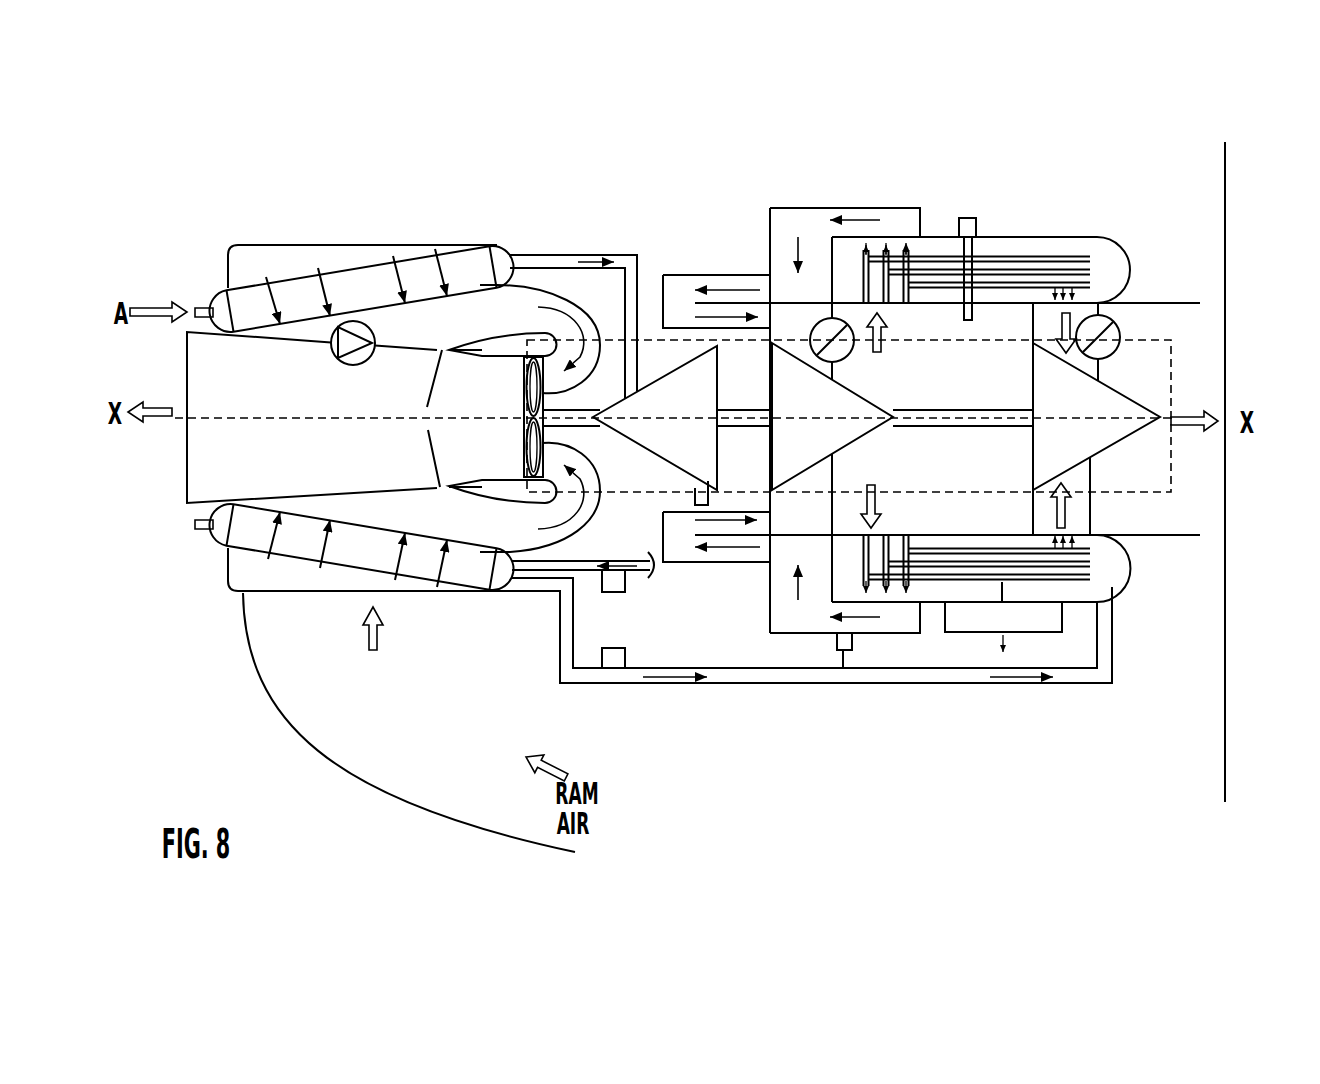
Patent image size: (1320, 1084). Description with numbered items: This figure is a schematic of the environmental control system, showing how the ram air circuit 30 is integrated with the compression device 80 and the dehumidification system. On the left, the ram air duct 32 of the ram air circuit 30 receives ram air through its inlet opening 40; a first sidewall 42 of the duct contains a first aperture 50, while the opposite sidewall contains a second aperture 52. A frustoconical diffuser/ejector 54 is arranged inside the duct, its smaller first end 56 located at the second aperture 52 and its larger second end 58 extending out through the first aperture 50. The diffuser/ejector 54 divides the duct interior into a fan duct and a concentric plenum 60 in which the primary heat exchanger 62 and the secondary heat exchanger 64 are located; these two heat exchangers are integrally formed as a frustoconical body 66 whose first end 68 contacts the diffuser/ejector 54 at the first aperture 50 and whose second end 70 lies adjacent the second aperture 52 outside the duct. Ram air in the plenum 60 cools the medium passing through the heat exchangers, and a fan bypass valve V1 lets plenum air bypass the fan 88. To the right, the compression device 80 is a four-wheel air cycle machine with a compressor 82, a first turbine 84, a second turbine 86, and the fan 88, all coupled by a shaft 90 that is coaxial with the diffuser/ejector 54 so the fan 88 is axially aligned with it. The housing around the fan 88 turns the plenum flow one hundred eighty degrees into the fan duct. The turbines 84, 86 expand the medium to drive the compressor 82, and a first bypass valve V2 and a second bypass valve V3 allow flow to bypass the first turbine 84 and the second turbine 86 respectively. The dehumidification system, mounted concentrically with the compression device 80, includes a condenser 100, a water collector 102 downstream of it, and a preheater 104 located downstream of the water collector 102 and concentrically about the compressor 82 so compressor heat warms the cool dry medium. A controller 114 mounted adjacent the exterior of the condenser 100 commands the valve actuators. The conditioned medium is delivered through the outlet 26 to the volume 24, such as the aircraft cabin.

The volume 24 is at (1268, 472).
The outlet 26 is at (1229, 421).
The ram air circuit 30 is at (216, 651).
The ram air duct 32 is at (232, 598).
The inlet opening 40 is at (334, 593).
The first sidewall 42 is at (227, 563).
The first aperture 50 is at (383, 277).
The second aperture 52 is at (560, 466).
The diffuser/ejector 54 is at (334, 417).
The first end of the diffuser/ejector 56 is at (522, 402).
The second end of the diffuser/ejector 58 is at (187, 371).
The plenum 60 is at (257, 260).
The primary heat exchanger 62 is at (367, 280).
The secondary heat exchanger 64 is at (417, 563).
The body 66 is at (303, 277).
The first end of the body 68 is at (228, 523).
The second end of the body 70 is at (496, 278).
The compression device 80 is at (642, 495).
The compressor 82 is at (655, 425).
The first turbine 84 is at (832, 416).
The second turbine 86 is at (1096, 416).
The fan 88 is at (527, 360).
The shaft 90 is at (977, 427).
The condenser 100 is at (1015, 263).
The water collector 102 is at (807, 230).
The preheater 104 is at (710, 273).
The controller 114 is at (978, 615).
The fan bypass valve V1 is at (353, 361).
The first bypass valve V2 is at (848, 355).
The second bypass valve V3 is at (1109, 343).